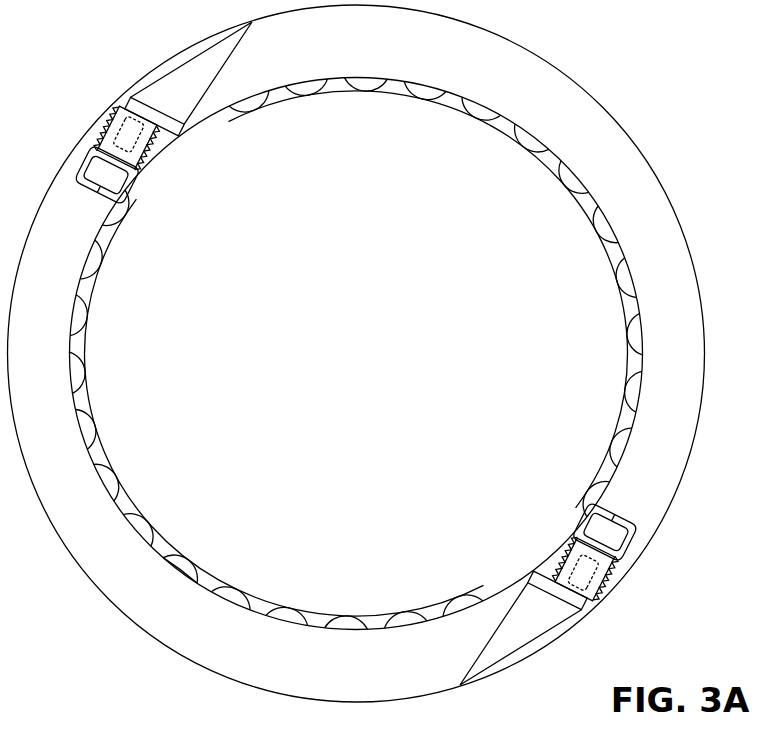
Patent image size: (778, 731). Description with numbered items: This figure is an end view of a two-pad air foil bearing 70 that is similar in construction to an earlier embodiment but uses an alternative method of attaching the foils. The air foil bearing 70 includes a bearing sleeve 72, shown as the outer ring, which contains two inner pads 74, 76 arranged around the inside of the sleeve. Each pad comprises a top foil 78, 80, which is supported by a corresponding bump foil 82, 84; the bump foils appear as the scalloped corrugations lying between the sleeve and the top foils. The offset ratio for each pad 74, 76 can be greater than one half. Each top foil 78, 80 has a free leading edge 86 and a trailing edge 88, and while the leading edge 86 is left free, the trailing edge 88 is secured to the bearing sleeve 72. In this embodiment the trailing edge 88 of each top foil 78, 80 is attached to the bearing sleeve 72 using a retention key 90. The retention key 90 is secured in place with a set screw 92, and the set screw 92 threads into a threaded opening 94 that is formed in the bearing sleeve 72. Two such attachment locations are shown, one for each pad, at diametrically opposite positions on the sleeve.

The two-pad air foil bearing 70 is at (673, 82).
The bearing sleeve 72 is at (683, 270).
The inner pad 74 is at (492, 158).
The inner pad 76 is at (180, 527).
The top foil 78 is at (583, 218).
The top foil 80 is at (263, 598).
The bump foil 82 is at (578, 193).
The bump foil 84 is at (186, 577).
The free leading edge 86 is at (133, 241).
The trailing edge 88 is at (153, 205).
The retention key 90 is at (104, 186).
The set screw 92 is at (101, 146).
The threaded opening 94 is at (150, 95).